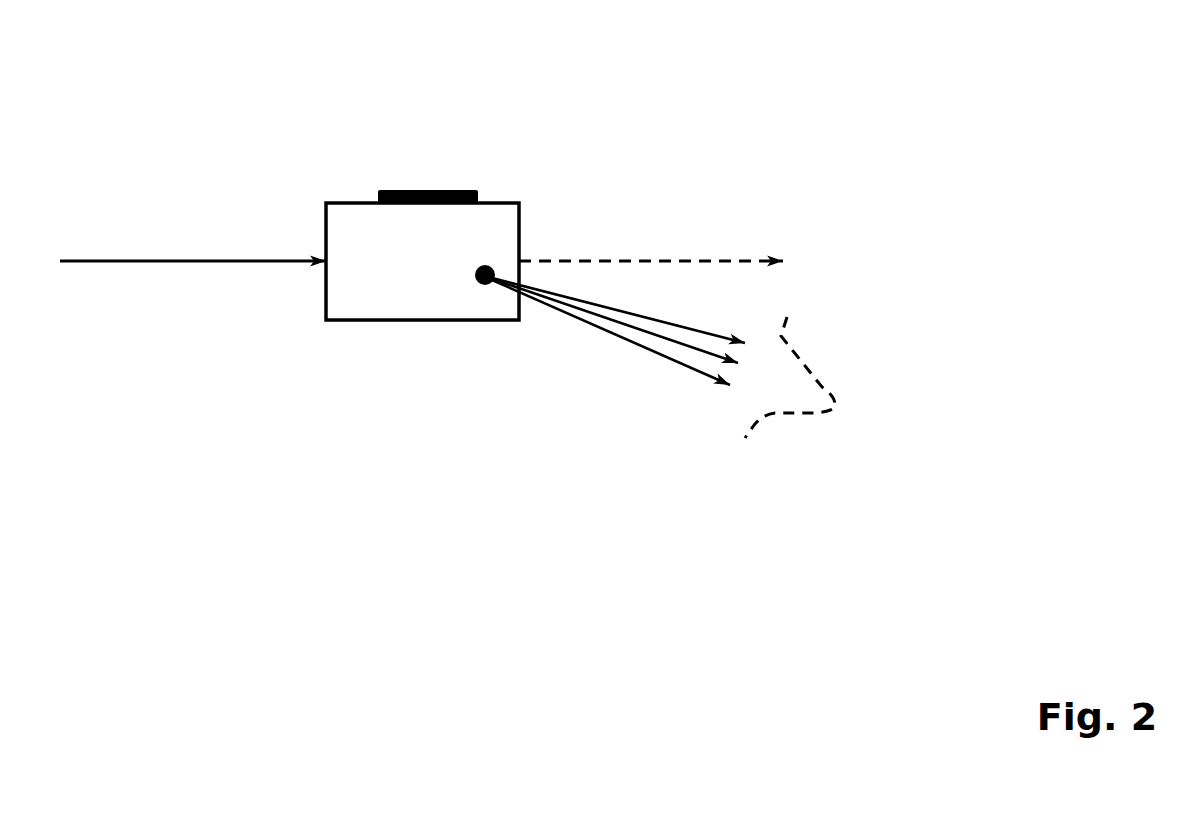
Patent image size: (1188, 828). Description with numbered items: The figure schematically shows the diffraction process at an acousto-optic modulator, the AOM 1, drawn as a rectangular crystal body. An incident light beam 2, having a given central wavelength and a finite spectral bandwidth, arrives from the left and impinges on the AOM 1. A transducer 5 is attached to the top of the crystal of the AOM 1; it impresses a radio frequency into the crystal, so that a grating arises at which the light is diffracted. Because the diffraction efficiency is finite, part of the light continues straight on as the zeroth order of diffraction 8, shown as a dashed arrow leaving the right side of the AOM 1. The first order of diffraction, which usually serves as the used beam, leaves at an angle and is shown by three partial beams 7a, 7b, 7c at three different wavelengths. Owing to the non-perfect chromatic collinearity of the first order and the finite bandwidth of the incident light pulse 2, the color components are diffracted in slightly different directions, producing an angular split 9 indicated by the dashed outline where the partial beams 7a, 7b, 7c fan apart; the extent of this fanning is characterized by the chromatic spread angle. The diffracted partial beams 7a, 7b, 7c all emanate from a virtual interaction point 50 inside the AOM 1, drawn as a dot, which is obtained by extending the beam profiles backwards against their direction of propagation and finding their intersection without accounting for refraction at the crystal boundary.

The AOM 1 is at (380, 307).
The incident light beam 2 is at (165, 261).
The transducer 5 is at (460, 191).
The virtual interaction point 50 is at (486, 255).
The partial beam 7a is at (703, 333).
The partial beam 7b is at (623, 325).
The partial beam 7c is at (560, 317).
The zeroth order of diffraction 8 is at (700, 261).
The angular split 9 is at (820, 385).